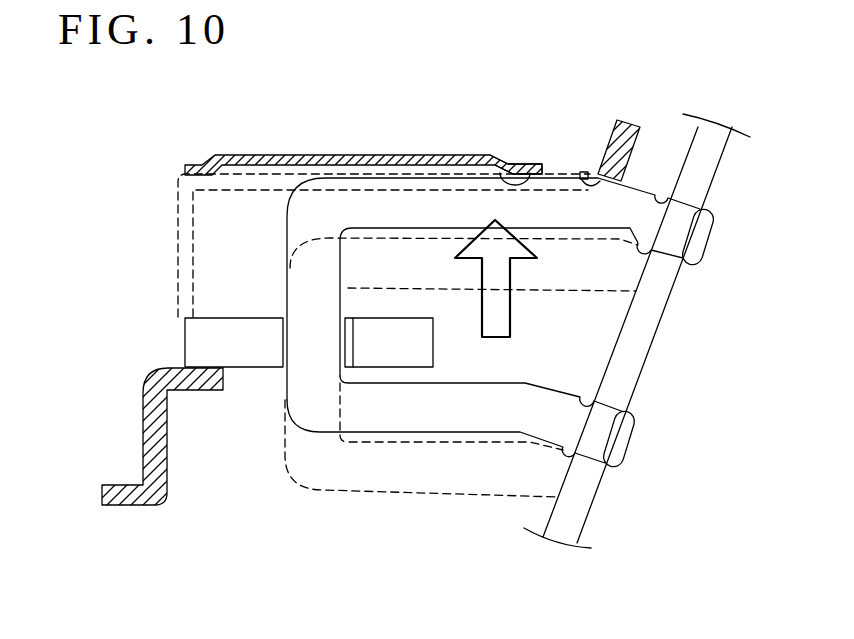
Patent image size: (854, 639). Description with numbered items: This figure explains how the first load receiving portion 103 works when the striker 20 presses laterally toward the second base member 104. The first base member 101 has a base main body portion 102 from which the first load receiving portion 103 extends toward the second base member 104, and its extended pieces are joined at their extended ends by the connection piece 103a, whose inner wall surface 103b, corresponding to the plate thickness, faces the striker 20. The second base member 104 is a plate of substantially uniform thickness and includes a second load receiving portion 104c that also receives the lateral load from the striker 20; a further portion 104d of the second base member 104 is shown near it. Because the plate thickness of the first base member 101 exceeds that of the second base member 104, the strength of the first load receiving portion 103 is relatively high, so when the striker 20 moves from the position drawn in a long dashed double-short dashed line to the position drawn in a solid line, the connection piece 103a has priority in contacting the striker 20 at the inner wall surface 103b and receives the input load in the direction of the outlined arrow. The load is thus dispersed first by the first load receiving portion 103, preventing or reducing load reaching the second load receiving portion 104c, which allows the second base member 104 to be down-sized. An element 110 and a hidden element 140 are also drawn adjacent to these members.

The striker 20 is at (398, 434).
The first base member 101 is at (158, 500).
The base main body portion 102 is at (188, 473).
The first load receiving portion 103 is at (637, 304).
The connection piece 103a is at (630, 121).
The inner wall surface 103b is at (580, 173).
The second base member 104 is at (310, 154).
The second load receiving portion 104c is at (537, 163).
The plate hook portion 104d is at (513, 172).
The block member 110 is at (184, 350).
The hidden channel member 140 is at (175, 217).